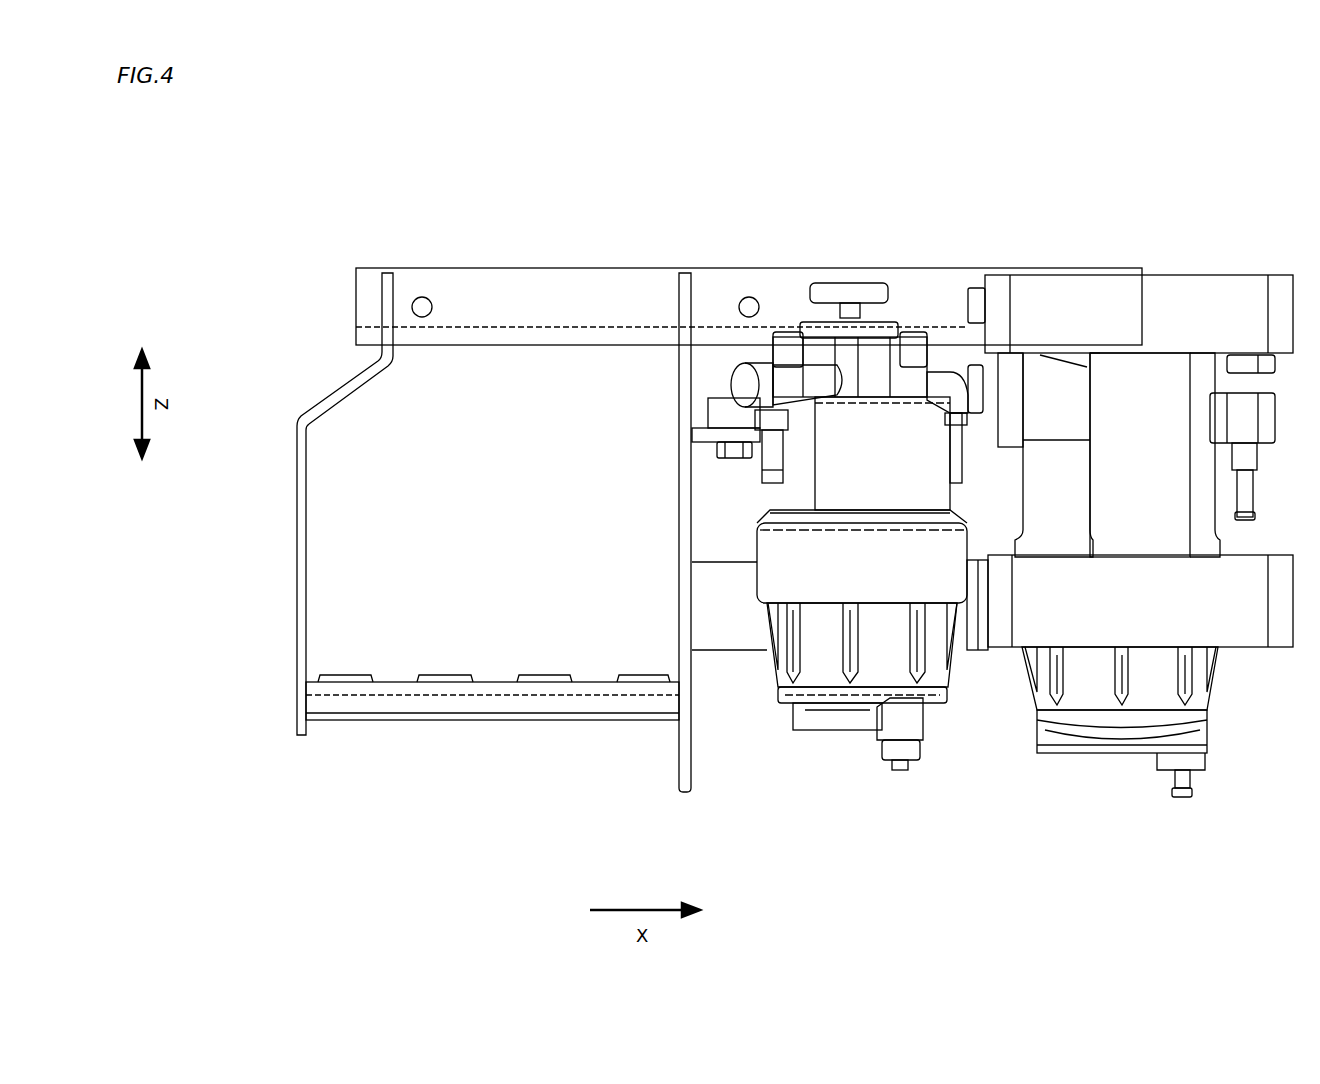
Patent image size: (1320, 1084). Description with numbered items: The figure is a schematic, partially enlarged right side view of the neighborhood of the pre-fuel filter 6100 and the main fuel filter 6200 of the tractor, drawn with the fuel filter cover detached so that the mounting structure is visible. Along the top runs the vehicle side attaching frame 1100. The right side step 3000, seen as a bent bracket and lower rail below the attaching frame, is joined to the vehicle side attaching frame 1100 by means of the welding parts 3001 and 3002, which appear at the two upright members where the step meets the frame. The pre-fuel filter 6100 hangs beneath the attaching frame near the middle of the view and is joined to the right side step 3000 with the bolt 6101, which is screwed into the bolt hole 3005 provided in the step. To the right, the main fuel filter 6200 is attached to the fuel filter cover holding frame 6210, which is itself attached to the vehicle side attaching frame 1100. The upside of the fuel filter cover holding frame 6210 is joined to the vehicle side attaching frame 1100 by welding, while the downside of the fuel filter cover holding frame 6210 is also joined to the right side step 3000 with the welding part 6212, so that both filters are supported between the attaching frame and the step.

The vehicle side attaching frame 1100 is at (457, 267).
The right side step 3000 is at (443, 720).
The welding part 3001 is at (679, 300).
The welding part 3002 is at (383, 300).
The bolt hole 3005 is at (692, 432).
The bolt 6101 is at (733, 460).
The welding part 6212 is at (695, 650).
The pre-fuel filter 6100 is at (827, 738).
The main fuel filter 6200 is at (1107, 762).
The fuel filter cover holding frame 6210 is at (1212, 277).